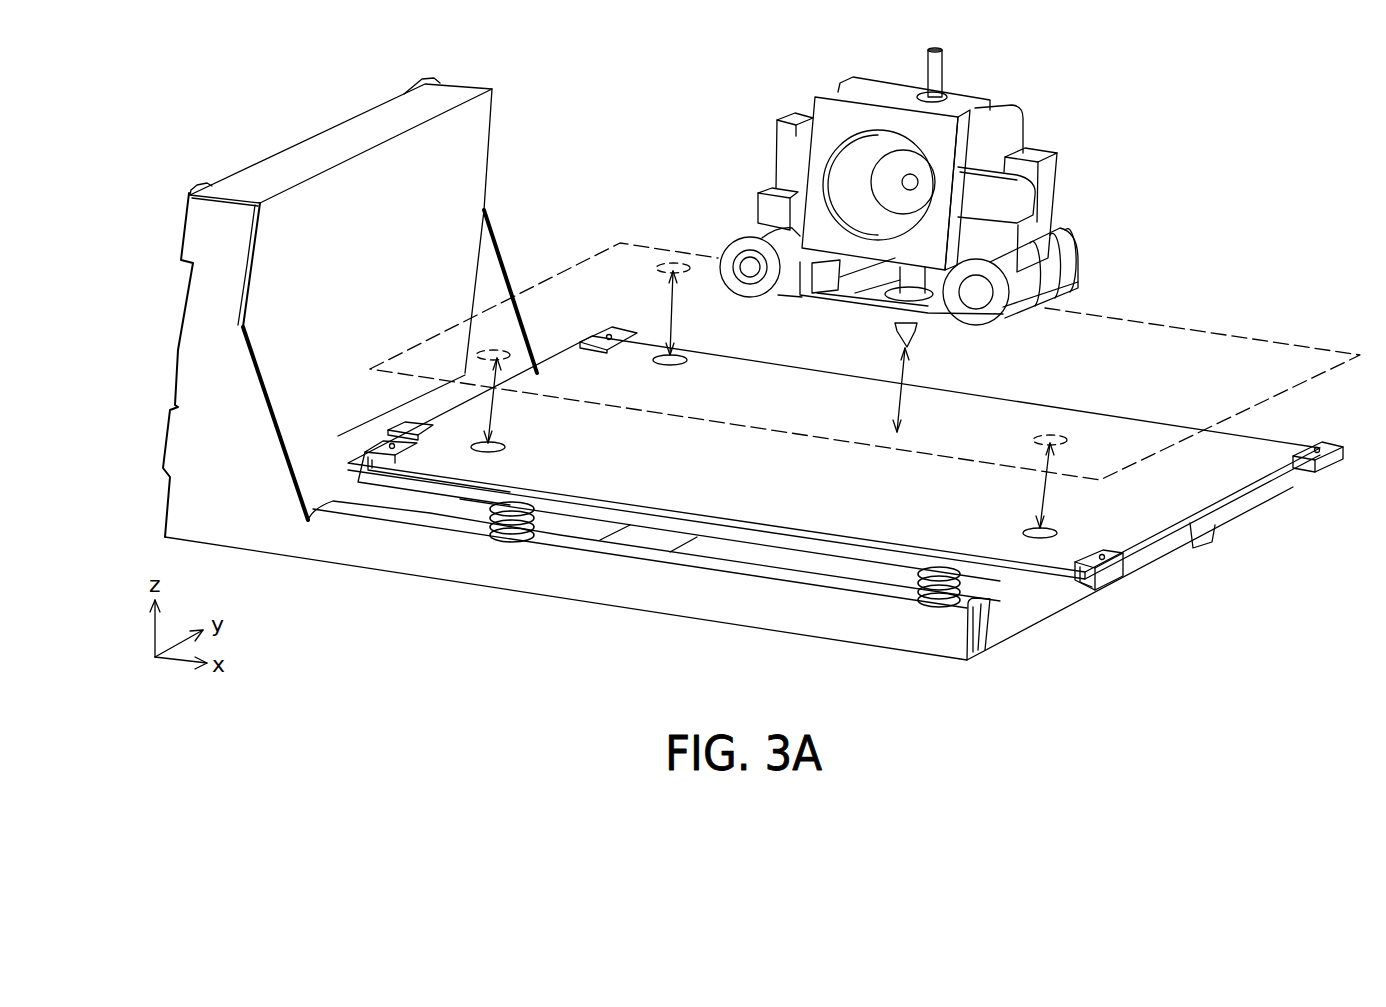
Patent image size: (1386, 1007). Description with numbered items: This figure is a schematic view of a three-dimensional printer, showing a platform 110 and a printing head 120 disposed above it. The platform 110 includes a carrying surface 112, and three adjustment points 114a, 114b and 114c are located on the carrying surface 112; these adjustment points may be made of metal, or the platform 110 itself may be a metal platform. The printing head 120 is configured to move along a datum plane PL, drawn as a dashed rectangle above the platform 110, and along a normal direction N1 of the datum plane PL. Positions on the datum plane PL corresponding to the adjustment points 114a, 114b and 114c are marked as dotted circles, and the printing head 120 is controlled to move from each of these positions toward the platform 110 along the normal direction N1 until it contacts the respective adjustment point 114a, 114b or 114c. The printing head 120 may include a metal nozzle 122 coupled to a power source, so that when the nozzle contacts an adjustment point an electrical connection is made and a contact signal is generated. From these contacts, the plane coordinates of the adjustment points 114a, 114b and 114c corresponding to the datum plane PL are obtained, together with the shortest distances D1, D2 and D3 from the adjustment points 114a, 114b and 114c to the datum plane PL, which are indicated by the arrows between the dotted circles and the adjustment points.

The platform 110 is at (1173, 518).
The carrying surface 112 is at (1235, 483).
The adjustment point 114a is at (1032, 537).
The adjustment point 114b is at (492, 455).
The adjustment point 114c is at (680, 358).
The printing head 120 is at (918, 214).
The metal nozzle 122 is at (917, 325).
The datum plane PL is at (1145, 327).
The shortest distance D1 is at (1057, 481).
The shortest distance D2 is at (501, 396).
The shortest distance D3 is at (681, 309).
The normal direction N1 is at (888, 390).